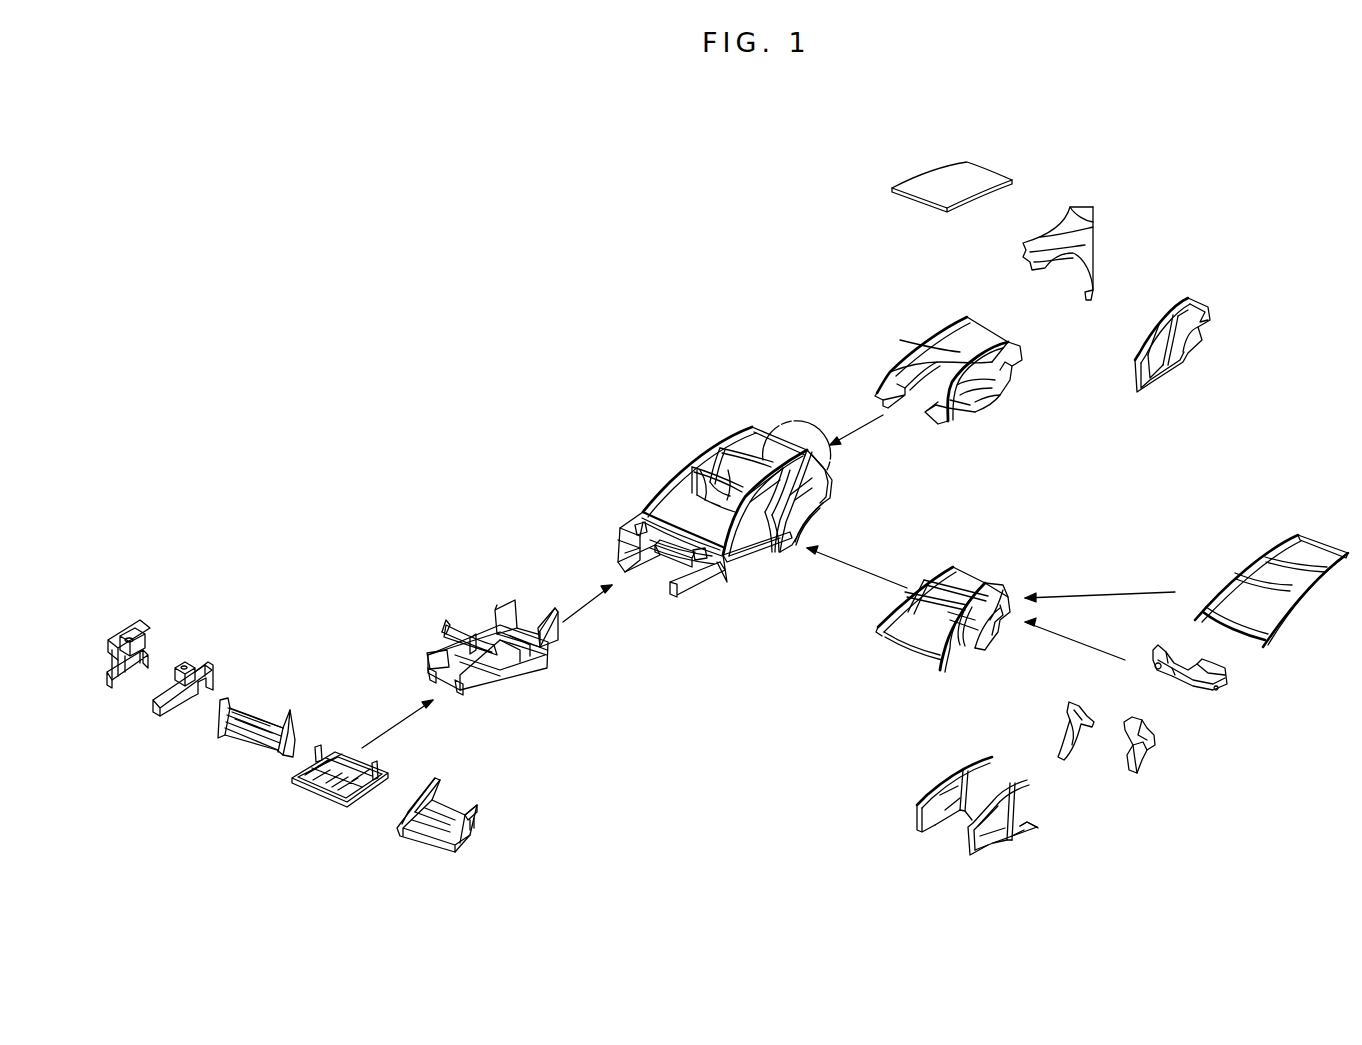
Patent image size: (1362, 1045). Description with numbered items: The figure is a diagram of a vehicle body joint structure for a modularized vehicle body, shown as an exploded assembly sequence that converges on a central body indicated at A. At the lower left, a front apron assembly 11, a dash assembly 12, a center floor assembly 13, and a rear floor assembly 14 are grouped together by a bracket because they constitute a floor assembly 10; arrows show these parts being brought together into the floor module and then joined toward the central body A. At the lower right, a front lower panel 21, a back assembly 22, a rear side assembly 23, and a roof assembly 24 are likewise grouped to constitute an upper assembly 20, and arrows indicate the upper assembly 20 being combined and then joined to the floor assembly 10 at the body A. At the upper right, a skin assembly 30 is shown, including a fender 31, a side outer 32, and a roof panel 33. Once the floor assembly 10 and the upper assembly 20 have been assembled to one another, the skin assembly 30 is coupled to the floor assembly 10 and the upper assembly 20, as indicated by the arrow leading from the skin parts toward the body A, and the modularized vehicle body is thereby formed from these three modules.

The vehicle body assembly A is at (797, 418).
The floor assembly 10 is at (409, 922).
The front apron assembly 11 is at (110, 688).
The dash assembly 12 is at (245, 738).
The center floor assembly 13 is at (322, 787).
The rear floor assembly 14 is at (427, 823).
The upper assembly 20 is at (1336, 698).
The front lower panel 21 is at (1010, 843).
The back assembly 22 is at (1193, 688).
The rear side assembly 23 is at (1147, 763).
The roof assembly 24 is at (1300, 588).
The skin assembly 30 is at (1294, 268).
The fender 31 is at (1088, 243).
The side outer 32 is at (1210, 312).
The roof panel 33 is at (975, 173).